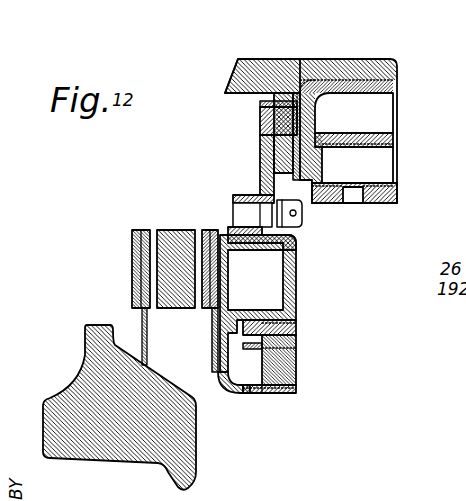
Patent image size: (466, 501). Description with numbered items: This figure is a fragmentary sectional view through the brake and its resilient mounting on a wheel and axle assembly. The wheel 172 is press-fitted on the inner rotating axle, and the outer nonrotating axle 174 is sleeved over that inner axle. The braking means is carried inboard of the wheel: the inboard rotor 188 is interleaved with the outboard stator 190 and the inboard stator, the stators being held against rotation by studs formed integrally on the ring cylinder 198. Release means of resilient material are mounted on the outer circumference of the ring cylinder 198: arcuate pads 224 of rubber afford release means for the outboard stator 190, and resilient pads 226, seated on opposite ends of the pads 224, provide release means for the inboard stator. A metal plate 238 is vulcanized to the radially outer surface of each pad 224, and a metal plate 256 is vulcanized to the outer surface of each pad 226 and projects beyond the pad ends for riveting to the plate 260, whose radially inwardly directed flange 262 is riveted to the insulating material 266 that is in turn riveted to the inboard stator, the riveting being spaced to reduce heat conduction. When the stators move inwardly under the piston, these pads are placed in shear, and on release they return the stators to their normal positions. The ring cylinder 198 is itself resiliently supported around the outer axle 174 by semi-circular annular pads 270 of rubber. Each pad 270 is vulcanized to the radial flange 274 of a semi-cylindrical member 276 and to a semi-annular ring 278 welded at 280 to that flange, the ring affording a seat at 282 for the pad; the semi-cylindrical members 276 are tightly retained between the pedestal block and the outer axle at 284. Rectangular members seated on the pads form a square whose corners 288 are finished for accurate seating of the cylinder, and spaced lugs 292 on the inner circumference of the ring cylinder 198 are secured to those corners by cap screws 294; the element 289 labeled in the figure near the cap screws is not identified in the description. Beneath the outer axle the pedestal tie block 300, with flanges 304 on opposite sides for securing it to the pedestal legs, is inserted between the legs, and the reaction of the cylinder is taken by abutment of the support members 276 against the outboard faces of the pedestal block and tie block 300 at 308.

The wheel 172 is at (82, 384).
The outer nonrotating axle 174 is at (372, 53).
The inboard rotor 188 is at (172, 230).
The outboard stator 190 is at (140, 313).
The ring cylinder 198 is at (297, 268).
The arcuate pads 224 is at (296, 327).
The resilient pads 226 is at (278, 371).
The metal plate 238 is at (296, 345).
The metal plate 256 is at (296, 387).
The plate 260 is at (245, 391).
The radially inwardly directed flange 262 is at (228, 378).
The insulating material 266 is at (212, 362).
The semi-circular annular pads 270 is at (323, 163).
The radial flange 274 is at (313, 123).
The semi-cylindrical member 276 is at (296, 75).
The semi-annular ring 278 is at (258, 101).
The weld 280 is at (245, 75).
The seat 282 is at (258, 113).
The retention location 284 is at (328, 82).
The corners 288 is at (260, 152).
The cap 289 is at (275, 233).
The spaced lugs 292 is at (243, 193).
The cap screws 294 is at (303, 212).
The pedestal tie block 300 is at (397, 140).
The flanges 304 is at (397, 192).
The abutment 308 is at (313, 103).